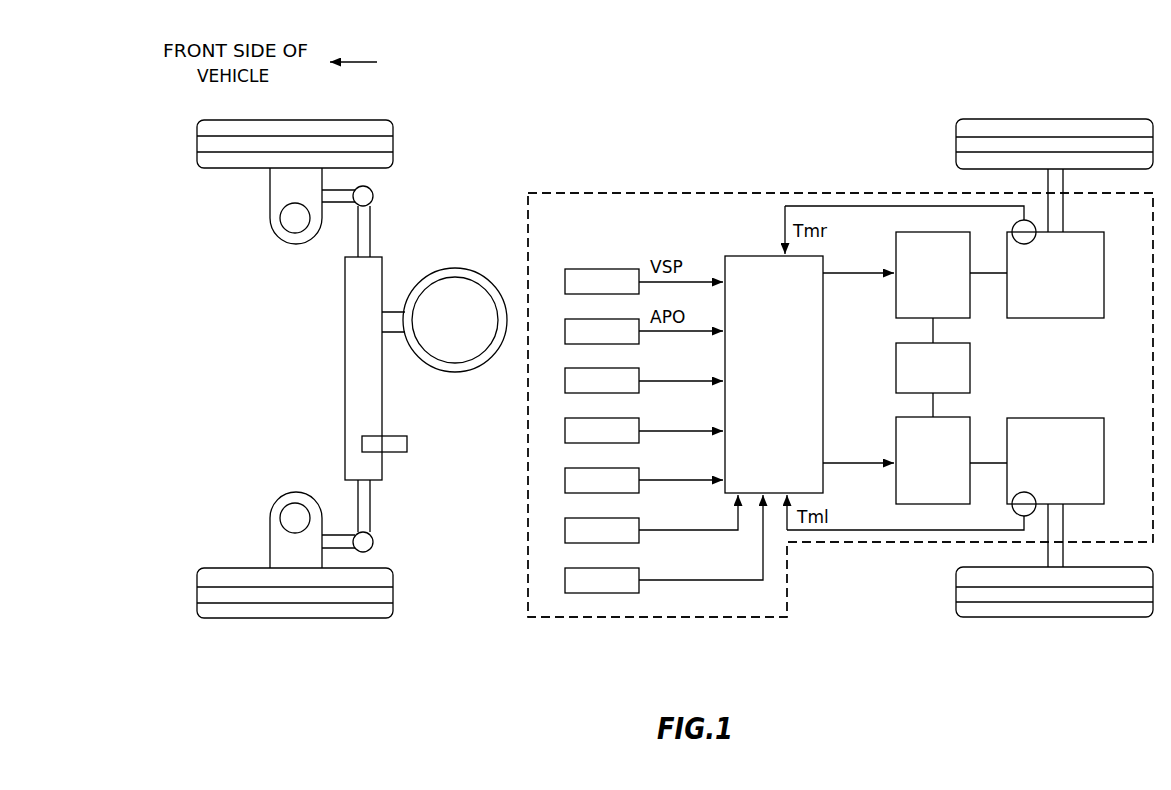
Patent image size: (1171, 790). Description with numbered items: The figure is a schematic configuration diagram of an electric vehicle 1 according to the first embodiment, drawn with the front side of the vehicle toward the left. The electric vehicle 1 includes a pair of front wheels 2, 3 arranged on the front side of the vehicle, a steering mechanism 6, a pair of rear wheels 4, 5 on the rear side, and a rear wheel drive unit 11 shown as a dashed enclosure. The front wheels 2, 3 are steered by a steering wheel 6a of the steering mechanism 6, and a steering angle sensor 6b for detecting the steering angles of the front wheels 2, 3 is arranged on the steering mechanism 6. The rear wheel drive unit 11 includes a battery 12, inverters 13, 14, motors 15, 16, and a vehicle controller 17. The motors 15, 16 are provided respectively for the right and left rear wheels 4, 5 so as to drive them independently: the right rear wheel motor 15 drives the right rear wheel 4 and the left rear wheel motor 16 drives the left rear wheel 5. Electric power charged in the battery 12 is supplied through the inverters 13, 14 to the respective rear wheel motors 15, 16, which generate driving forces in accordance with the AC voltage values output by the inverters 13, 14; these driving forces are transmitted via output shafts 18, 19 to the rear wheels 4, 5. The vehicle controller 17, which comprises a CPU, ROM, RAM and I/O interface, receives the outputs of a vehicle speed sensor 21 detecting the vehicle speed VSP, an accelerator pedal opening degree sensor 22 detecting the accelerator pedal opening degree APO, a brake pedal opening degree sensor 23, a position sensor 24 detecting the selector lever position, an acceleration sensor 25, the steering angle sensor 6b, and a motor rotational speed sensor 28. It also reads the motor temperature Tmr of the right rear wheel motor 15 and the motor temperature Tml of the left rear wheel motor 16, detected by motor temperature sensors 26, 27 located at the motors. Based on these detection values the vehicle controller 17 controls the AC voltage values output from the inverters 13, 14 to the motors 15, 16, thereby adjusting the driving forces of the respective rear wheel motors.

The electric vehicle 1 is at (743, 102).
The front wheel 2 is at (365, 130).
The front wheel 3 is at (358, 610).
The right rear wheel 4 is at (985, 133).
The left rear wheel 5 is at (1103, 610).
The steering mechanism 6 is at (447, 251).
The steering wheel 6a is at (455, 370).
The steering angle sensor 6b is at (407, 442).
The rear wheel drive unit 11 is at (768, 195).
The battery 12 is at (896, 381).
The inverter 13 is at (896, 303).
The inverter 14 is at (896, 437).
The right rear wheel motor 15 is at (1087, 306).
The left rear wheel motor 16 is at (1033, 428).
The vehicle controller 17 is at (750, 263).
The output shaft 18 is at (1064, 212).
The output shaft 19 is at (1064, 526).
The vehicle speed sensor 21 is at (583, 270).
The accelerator pedal opening degree sensor 22 is at (583, 320).
The brake pedal opening degree sensor 23 is at (583, 370).
The position sensor 24 is at (583, 420).
The acceleration sensor 25 is at (583, 470).
The motor temperature sensor 26 is at (1016, 226).
The motor temperature sensor 27 is at (1014, 509).
The motor rotational speed sensor 28 is at (583, 570).